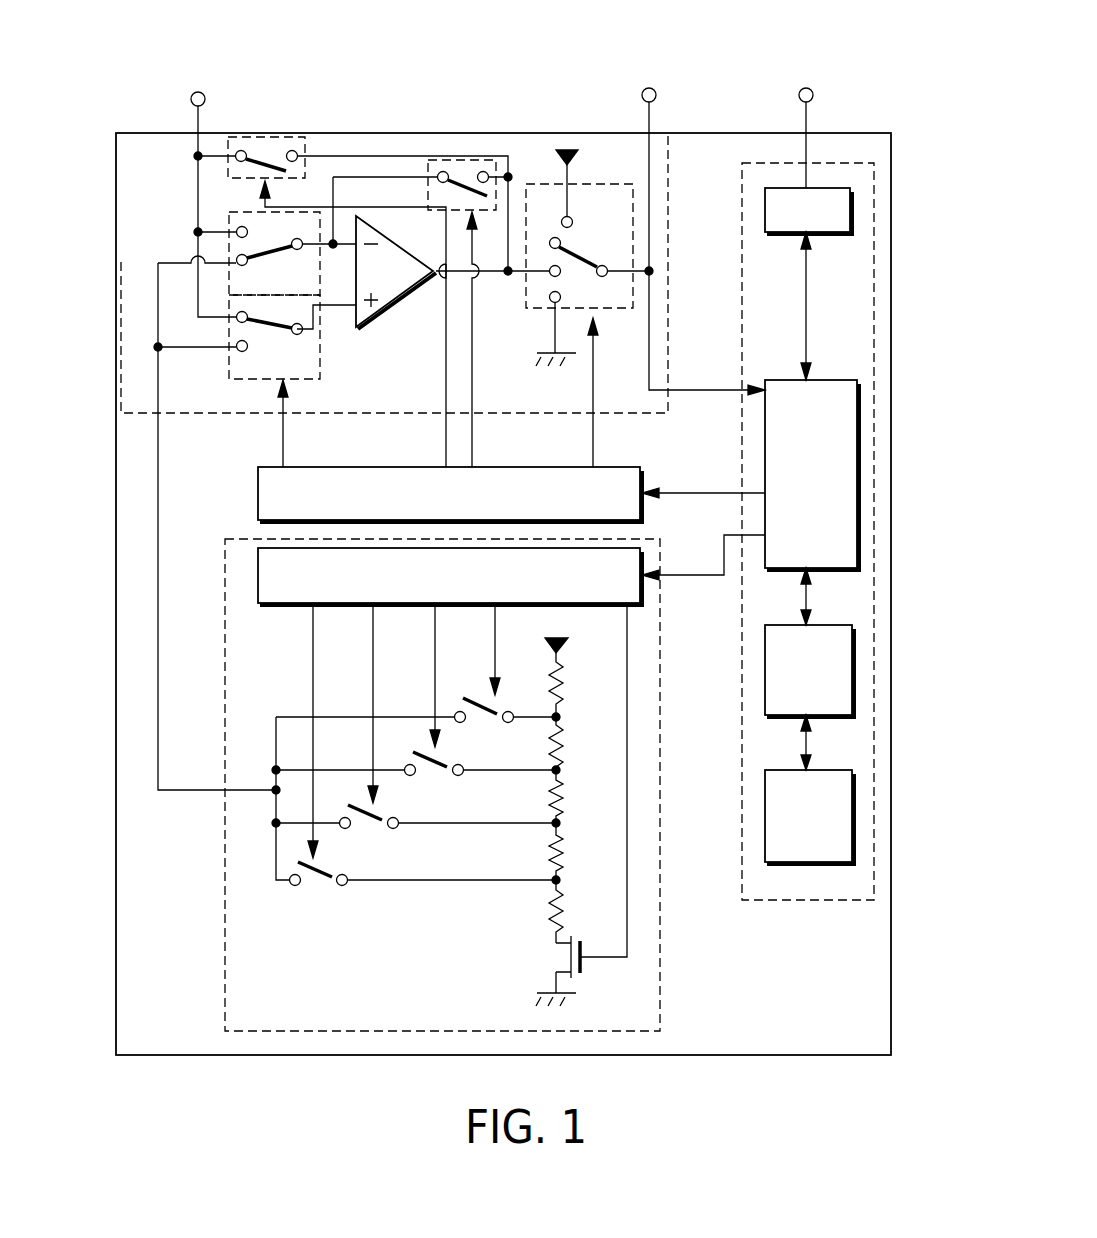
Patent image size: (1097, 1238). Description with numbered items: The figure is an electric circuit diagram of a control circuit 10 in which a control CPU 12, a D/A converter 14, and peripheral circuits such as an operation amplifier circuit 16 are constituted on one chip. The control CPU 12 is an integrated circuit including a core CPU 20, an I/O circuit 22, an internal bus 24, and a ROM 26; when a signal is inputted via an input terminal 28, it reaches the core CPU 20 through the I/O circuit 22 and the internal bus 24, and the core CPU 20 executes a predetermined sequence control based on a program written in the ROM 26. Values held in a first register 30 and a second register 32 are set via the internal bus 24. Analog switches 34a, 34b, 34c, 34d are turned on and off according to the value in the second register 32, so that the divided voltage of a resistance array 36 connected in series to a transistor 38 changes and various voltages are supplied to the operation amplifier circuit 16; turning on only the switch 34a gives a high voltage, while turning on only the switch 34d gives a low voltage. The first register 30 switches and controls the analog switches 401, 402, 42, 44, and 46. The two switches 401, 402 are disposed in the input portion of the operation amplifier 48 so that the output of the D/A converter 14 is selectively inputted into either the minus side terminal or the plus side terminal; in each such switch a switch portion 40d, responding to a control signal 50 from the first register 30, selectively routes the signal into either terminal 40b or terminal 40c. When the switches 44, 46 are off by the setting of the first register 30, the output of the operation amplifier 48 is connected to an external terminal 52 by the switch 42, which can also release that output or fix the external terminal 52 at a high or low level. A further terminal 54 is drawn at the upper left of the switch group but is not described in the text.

The control circuit 10 is at (891, 205).
The control CPU 12 is at (874, 467).
The D/A converter 14 is at (660, 930).
The operation amplifier circuit 16 is at (668, 238).
The core CPU 20 is at (852, 650).
The I/O circuit 22 is at (850, 190).
The internal bus 24 is at (826, 378).
The ROM 26 is at (826, 865).
The input terminal 28 is at (812, 92).
The first register 30 is at (620, 466).
The second register 32 is at (642, 560).
The analog switch 34a is at (466, 722).
The analog switch 34b is at (416, 775).
The analog switch 34c is at (351, 828).
The analog switch 34d is at (301, 885).
The resistance array 36 is at (560, 745).
The transistor 38 is at (556, 970).
The terminal 40b is at (232, 229).
The terminal 40c is at (233, 259).
The switch portion 40d is at (273, 243).
The switch 401 is at (229, 350).
The switch 402 is at (229, 278).
The switch 42 is at (588, 184).
The switch 44 is at (250, 137).
The switch 46 is at (485, 160).
The operation amplifier 48 is at (390, 308).
The control signal 50 is at (283, 437).
The external terminal 52 is at (656, 92).
The terminal 54 is at (198, 92).